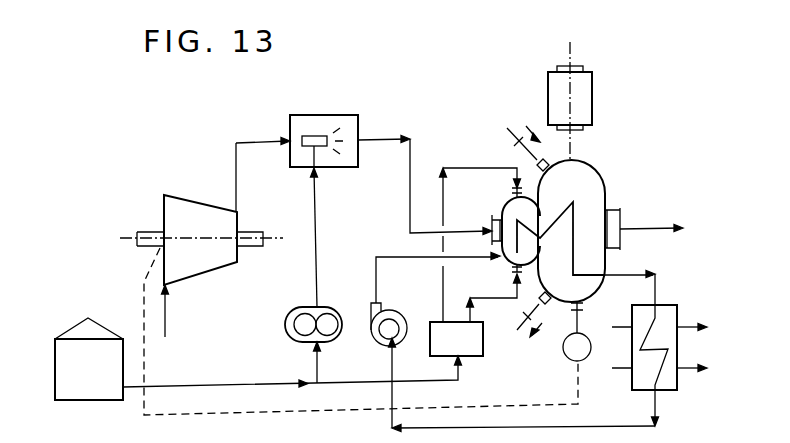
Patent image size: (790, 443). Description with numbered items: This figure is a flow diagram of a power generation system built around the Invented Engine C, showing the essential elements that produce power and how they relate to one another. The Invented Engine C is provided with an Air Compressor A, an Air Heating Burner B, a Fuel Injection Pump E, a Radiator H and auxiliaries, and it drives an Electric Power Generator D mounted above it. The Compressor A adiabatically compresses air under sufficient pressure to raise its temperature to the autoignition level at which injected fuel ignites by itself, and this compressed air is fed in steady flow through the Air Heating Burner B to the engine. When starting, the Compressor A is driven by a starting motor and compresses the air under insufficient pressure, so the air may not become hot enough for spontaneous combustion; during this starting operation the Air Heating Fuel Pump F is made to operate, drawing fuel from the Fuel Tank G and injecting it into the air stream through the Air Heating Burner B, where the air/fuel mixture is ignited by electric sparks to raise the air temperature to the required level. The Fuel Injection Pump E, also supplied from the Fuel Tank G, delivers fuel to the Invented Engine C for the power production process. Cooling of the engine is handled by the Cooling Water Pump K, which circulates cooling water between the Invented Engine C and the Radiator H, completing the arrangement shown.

The compressor A is at (349, 279).
The air heating burner B is at (364, 166).
The invented engine C is at (636, 186).
The electric power generator D is at (588, 96).
The fuel injection pump E is at (466, 355).
The air heating fuel pump F is at (316, 275).
The fuel tank G is at (251, 348).
The radiator H is at (549, 356).
The cooling water pump K is at (393, 357).